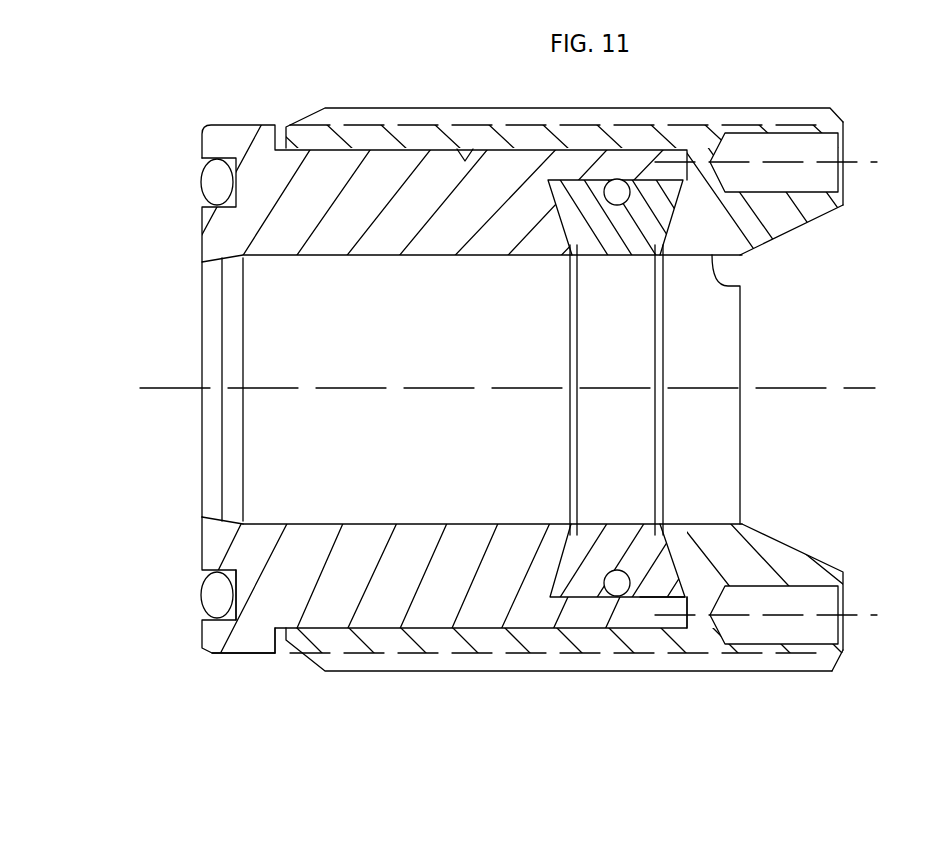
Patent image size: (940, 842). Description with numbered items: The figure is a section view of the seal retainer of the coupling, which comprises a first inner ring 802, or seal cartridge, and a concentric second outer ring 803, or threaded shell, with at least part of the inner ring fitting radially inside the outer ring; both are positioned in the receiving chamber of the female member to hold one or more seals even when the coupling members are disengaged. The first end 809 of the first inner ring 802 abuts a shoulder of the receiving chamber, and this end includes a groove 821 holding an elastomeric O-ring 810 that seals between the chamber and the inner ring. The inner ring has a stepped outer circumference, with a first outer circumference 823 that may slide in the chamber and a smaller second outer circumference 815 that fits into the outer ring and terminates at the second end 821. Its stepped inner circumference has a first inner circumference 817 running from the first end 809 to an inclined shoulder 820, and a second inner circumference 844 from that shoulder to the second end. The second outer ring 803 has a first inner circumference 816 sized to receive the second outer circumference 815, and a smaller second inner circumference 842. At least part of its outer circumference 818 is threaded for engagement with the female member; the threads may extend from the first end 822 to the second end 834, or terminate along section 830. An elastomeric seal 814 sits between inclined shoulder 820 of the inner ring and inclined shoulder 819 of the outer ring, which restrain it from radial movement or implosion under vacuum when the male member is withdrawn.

The first inner ring 802 is at (375, 583).
The second outer ring 803 is at (715, 217).
The first end 809 is at (203, 620).
The elastomeric O-ring 810 is at (218, 178).
The elastomeric seal 814 is at (580, 560).
The second outer circumference 815 is at (425, 148).
The first inner circumference 816 is at (470, 158).
The first inner circumference 817 is at (297, 523).
The outer circumference 818 is at (662, 658).
The inclined shoulder 819 is at (672, 198).
The inclined shoulder 820 is at (592, 560).
The groove 821 is at (238, 606).
The first end 822 is at (840, 646).
The first outer circumference 823 is at (251, 655).
The section 830 is at (441, 637).
The second end 834 is at (281, 632).
The second inner circumference 842 is at (740, 287).
The second inner circumference 844 is at (647, 597).